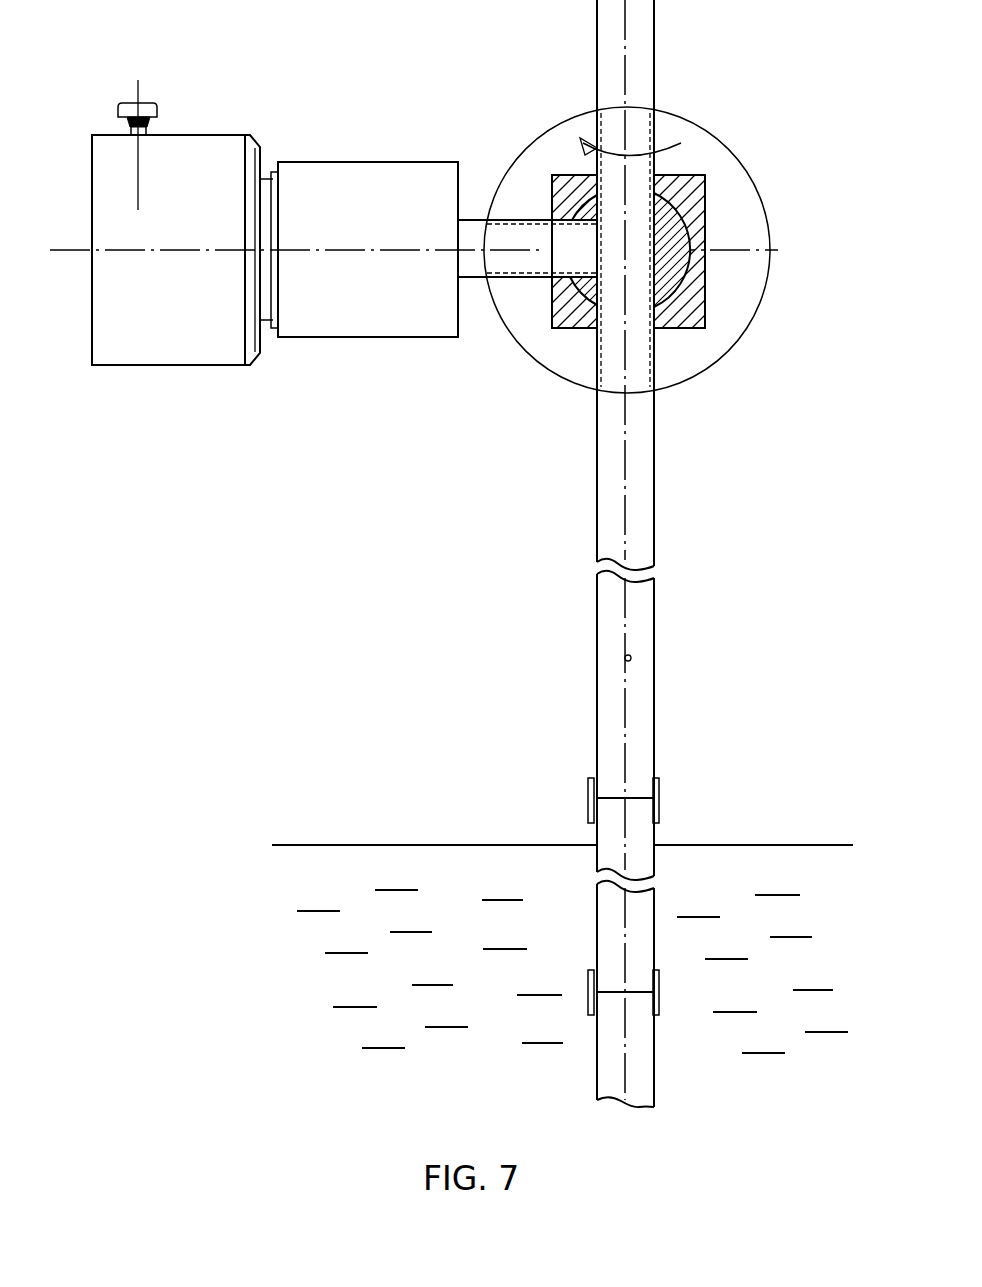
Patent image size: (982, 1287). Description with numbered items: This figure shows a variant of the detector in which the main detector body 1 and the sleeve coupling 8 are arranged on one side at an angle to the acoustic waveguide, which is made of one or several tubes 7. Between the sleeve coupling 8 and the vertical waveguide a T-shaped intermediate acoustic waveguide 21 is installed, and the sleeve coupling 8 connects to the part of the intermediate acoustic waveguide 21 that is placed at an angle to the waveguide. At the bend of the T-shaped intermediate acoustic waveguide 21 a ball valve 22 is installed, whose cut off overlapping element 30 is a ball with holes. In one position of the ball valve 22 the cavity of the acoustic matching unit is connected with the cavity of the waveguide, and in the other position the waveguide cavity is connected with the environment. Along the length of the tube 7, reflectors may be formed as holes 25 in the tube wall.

The body 1 is at (170, 352).
The sleeve coupling 8 is at (358, 302).
The tube 7 is at (635, 530).
The ball valve 22 is at (703, 188).
The cut off overlapping element 30 is at (687, 253).
The T-shaped intermediate acoustic waveguide 21 is at (654, 356).
The holes 25 is at (632, 657).